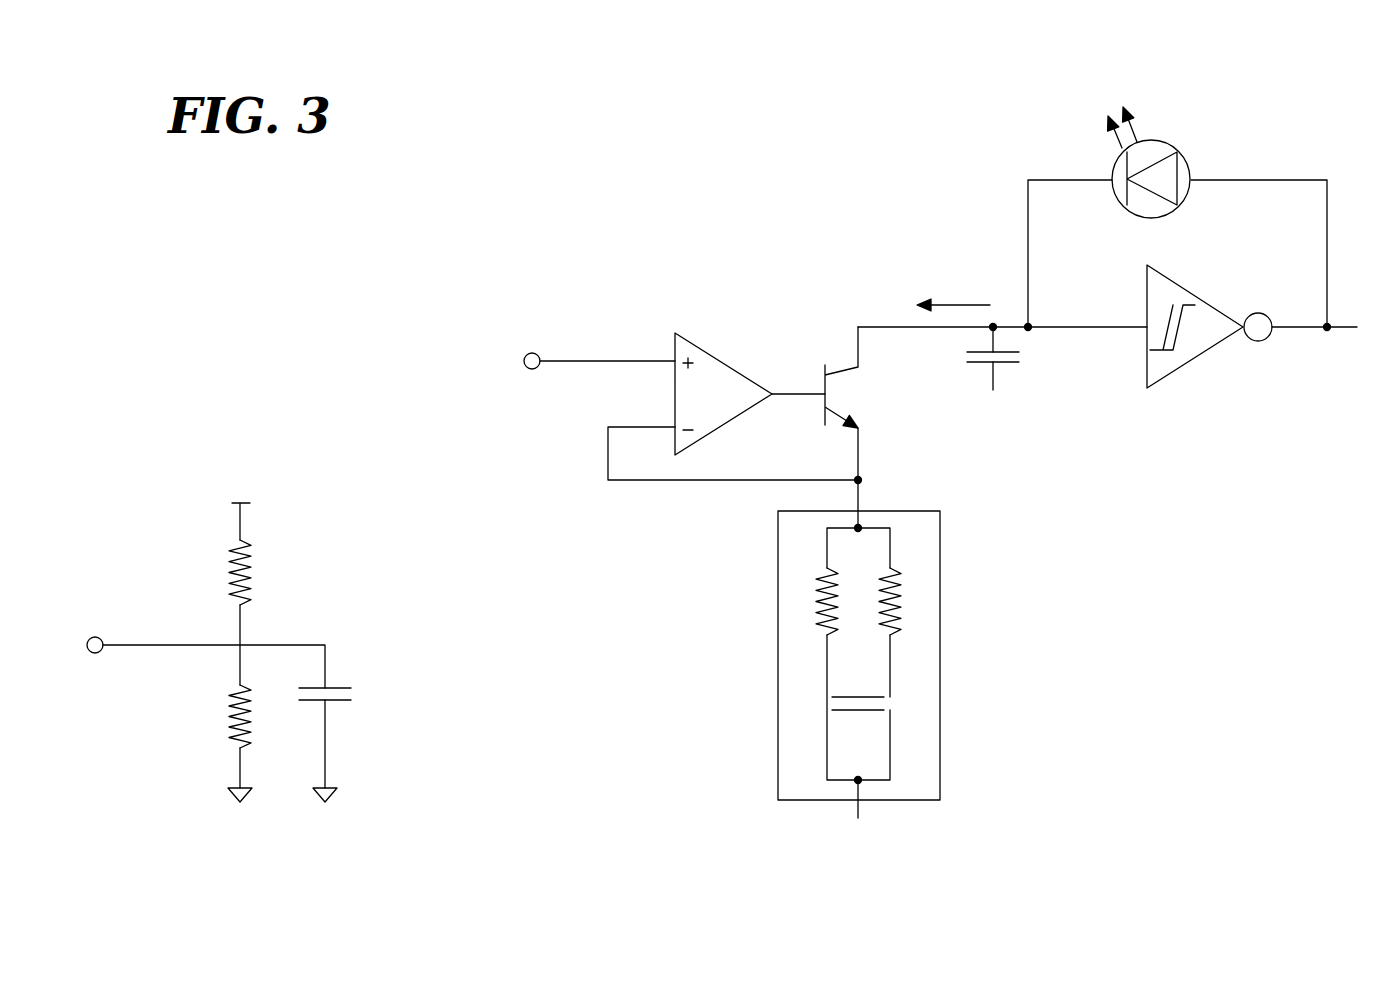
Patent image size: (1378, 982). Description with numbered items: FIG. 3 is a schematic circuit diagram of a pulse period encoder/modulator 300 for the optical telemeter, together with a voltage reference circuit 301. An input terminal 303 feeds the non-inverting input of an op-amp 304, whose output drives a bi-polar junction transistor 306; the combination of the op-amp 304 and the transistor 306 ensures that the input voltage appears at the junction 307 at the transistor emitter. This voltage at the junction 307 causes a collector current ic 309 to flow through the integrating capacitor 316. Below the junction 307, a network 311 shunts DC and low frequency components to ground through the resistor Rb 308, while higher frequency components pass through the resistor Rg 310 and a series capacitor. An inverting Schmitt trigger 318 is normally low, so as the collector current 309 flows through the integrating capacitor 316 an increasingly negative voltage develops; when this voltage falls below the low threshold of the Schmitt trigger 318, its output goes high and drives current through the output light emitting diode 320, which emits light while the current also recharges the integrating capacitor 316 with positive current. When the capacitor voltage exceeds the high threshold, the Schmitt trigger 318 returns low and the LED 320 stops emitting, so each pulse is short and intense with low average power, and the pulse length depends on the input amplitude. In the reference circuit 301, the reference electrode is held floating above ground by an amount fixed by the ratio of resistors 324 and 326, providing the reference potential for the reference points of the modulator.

The pulse period encoder/modulator 300 is at (1277, 117).
The circuit 301 is at (261, 639).
The input terminal 303 is at (527, 354).
The op-amp 304 is at (720, 358).
The bi-polar junction transistor 306 is at (828, 382).
The junction 307 is at (860, 480).
The resistor Rb 308 is at (818, 595).
The collector current ic 309 is at (957, 303).
The resistor Rg 310 is at (897, 603).
The network 311 is at (940, 580).
The integrating capacitor Ci 316 is at (1022, 357).
The inverting Schmitt trigger 318 is at (1185, 367).
The output light emitting diode 320 is at (1173, 145).
The resistor 324 is at (242, 575).
The resistor 326 is at (242, 713).